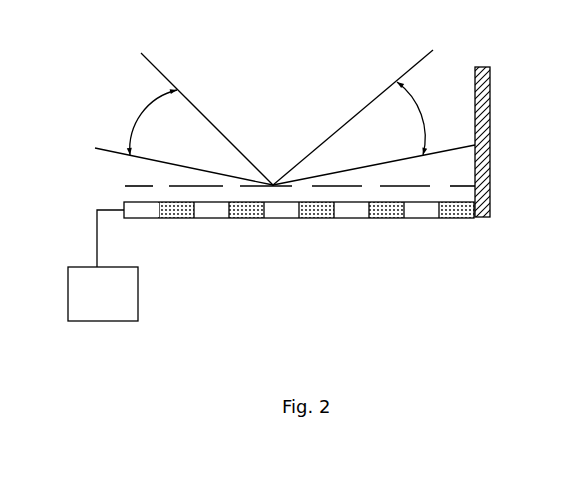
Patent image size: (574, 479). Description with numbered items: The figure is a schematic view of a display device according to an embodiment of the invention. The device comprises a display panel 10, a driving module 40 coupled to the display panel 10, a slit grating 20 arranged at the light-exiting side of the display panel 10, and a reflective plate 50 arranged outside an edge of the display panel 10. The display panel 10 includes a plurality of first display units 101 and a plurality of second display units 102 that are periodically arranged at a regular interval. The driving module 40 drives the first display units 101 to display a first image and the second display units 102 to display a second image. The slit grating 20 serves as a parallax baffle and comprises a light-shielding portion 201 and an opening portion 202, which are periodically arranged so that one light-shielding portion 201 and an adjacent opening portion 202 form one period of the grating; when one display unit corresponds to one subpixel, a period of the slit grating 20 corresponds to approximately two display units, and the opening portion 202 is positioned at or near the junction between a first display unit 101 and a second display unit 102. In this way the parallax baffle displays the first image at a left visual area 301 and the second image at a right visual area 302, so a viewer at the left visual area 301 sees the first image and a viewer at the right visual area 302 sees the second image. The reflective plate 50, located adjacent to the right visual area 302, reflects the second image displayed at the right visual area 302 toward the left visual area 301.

The display panel 10 is at (413, 218).
The first display unit 101 is at (143, 210).
The second display unit 102 is at (178, 210).
The slit grating 20 is at (130, 186).
The light-shielding portion 201 is at (272, 185).
The opening portion 202 is at (300, 188).
The left visual area 301 is at (134, 122).
The right visual area 302 is at (422, 122).
The driving module 40 is at (103, 294).
The reflective plate 50 is at (480, 138).